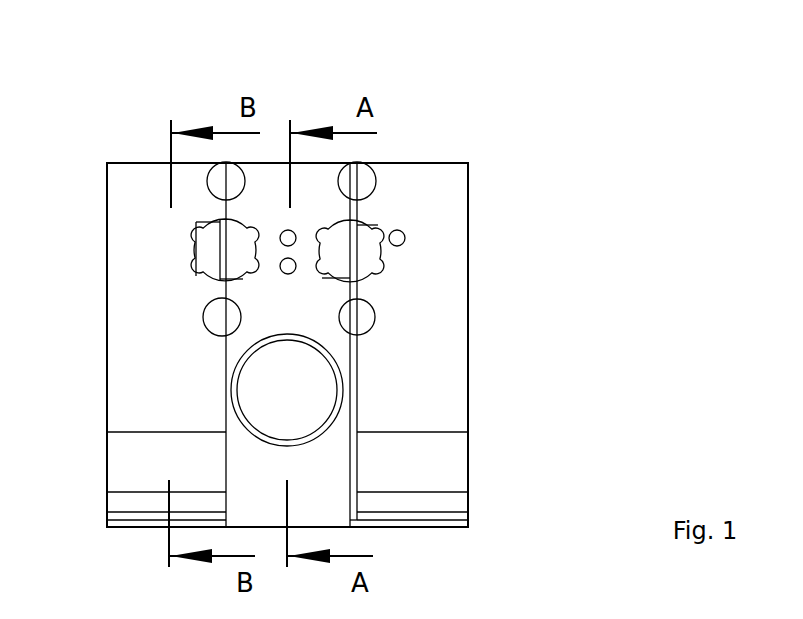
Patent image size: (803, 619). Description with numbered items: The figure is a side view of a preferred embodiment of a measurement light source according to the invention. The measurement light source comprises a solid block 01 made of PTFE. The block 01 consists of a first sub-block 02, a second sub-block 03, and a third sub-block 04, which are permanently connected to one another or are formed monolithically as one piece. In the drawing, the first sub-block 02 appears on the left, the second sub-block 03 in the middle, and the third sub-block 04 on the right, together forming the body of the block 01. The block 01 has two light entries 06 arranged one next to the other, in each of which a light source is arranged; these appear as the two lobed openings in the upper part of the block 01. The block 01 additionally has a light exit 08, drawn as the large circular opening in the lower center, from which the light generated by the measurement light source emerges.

The block 01 is at (457, 385).
The first sub-block 02 is at (127, 293).
The second sub-block 03 is at (262, 185).
The third sub-block 04 is at (445, 210).
The light entries 06 is at (202, 252).
The light exit 08 is at (248, 382).